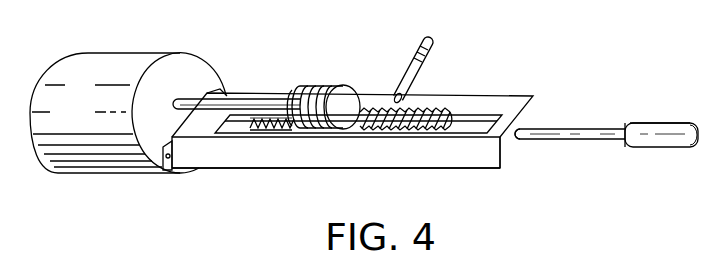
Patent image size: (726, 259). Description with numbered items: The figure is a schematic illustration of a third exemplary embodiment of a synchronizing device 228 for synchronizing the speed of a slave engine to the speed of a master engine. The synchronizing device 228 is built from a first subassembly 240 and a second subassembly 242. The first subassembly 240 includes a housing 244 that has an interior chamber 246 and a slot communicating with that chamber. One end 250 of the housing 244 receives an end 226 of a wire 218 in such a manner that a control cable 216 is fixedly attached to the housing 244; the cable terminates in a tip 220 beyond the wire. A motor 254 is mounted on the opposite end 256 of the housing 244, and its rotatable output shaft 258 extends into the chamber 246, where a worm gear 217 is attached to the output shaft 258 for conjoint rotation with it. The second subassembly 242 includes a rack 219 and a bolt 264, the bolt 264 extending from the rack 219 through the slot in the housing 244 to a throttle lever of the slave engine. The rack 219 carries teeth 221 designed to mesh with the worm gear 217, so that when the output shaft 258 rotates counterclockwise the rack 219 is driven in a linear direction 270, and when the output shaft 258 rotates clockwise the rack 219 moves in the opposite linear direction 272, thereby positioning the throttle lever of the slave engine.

The control cable 216 is at (643, 121).
The worm gear 217 is at (298, 84).
The wire 218 is at (588, 136).
The rack 219 is at (262, 122).
The nose piece 220 is at (650, 137).
The teeth 221 is at (409, 110).
The end of wire 226 is at (528, 133).
The synchronizing device 228 is at (237, 66).
The first subassembly 240 is at (501, 95).
The second subassembly 242 is at (453, 114).
The housing 244 is at (397, 152).
The interior chamber 246 is at (469, 96).
The end of housing 250 is at (510, 143).
The motor 254 is at (110, 147).
The opposite end of housing 256 is at (177, 146).
The output shaft 258 is at (185, 108).
The bolt 264 is at (408, 71).
The linear direction 270 is at (328, 27).
The opposite linear direction 272 is at (403, 16).